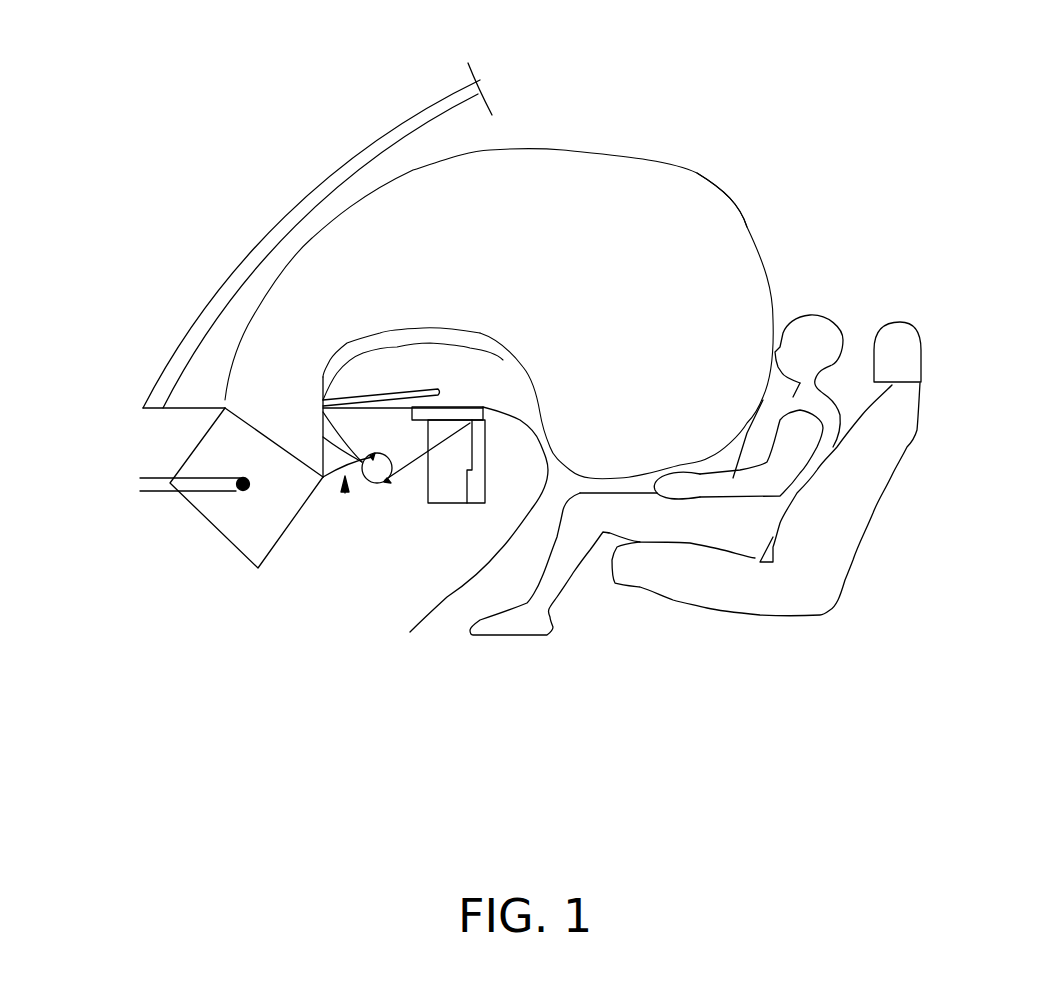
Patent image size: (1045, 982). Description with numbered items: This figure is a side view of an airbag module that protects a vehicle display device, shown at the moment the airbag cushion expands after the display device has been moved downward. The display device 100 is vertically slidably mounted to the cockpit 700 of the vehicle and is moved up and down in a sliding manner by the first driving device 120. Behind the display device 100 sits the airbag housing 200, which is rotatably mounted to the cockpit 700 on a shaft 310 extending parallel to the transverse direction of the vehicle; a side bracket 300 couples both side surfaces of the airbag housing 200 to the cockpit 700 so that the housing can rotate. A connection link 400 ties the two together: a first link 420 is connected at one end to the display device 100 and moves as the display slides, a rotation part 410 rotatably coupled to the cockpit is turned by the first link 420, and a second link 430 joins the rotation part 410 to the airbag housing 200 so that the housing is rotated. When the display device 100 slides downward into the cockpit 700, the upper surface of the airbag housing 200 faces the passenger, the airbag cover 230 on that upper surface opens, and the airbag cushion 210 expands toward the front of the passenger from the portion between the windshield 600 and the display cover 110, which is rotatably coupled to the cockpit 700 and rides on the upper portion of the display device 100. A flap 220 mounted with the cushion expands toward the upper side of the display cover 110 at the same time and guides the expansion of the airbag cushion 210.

The display device 100 is at (480, 435).
The display cover 110 is at (465, 413).
The first driving device 120 is at (447, 483).
The airbag housing 200 is at (258, 568).
The airbag cushion 210 is at (700, 190).
The flap 220 is at (405, 357).
The airbag cover 230 is at (367, 397).
The side bracket 300 is at (155, 493).
The shaft 310 is at (243, 492).
The connection link 400 is at (345, 493).
The rotation part 410 is at (372, 483).
The first link 420 is at (323, 399).
The second link 430 is at (323, 437).
The windshield 600 is at (398, 137).
The cockpit 700 is at (495, 518).